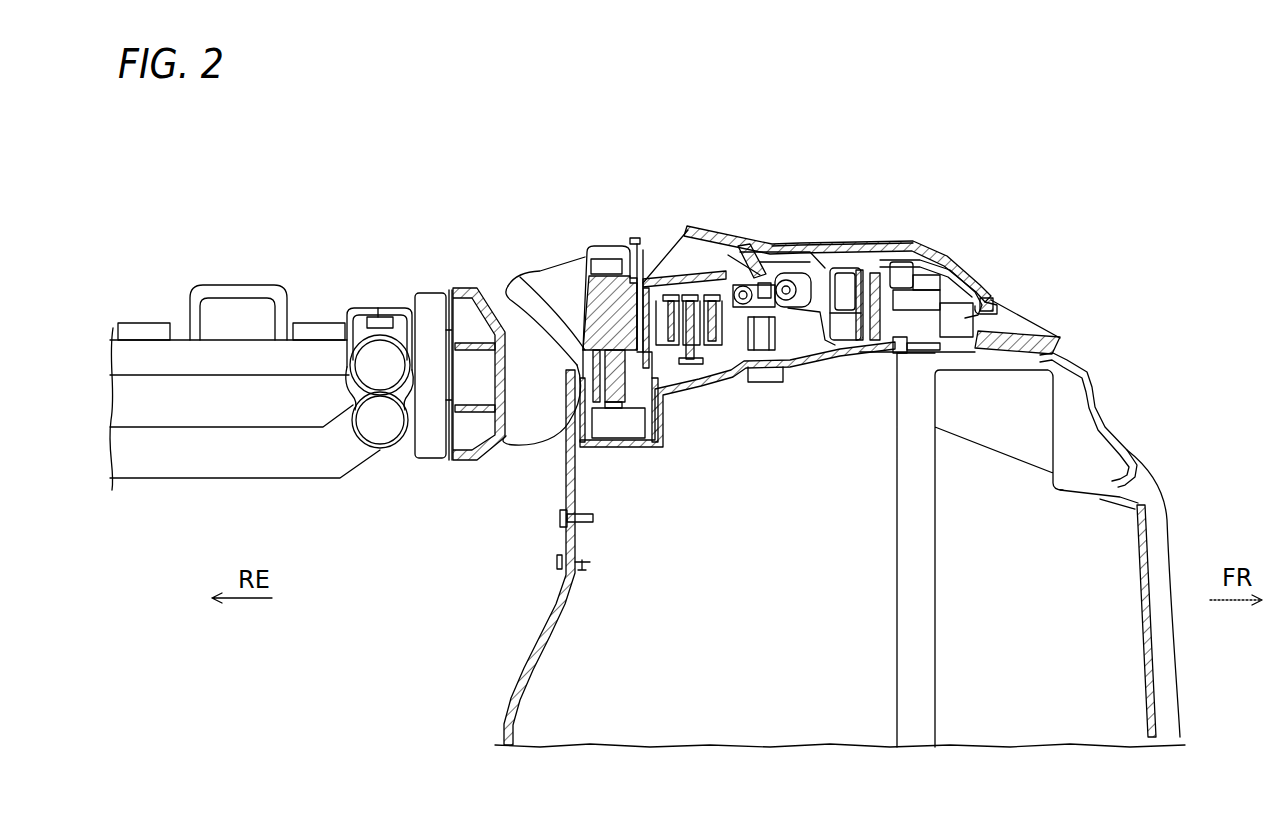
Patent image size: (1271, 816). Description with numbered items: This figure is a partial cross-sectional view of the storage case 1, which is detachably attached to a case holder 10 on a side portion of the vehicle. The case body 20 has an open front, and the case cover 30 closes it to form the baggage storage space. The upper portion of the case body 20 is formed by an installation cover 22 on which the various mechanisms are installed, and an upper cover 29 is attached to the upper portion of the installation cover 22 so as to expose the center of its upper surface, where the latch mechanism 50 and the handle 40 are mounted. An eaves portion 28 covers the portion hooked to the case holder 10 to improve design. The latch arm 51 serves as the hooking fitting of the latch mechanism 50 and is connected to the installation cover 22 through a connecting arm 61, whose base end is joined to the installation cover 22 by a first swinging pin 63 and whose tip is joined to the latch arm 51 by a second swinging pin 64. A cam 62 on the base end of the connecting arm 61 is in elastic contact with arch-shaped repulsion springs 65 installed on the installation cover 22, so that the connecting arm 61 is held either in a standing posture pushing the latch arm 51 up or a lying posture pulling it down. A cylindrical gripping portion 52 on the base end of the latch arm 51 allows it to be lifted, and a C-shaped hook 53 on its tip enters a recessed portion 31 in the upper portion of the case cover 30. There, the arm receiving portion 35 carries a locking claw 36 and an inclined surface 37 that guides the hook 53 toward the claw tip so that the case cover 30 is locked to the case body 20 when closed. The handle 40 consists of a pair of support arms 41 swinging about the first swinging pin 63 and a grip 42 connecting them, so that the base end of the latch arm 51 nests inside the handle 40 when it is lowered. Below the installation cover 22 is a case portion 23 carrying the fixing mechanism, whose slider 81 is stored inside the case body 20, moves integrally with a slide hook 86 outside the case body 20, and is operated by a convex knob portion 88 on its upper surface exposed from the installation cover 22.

The storage case 1 is at (1100, 343).
The case holder 10 is at (478, 287).
The case body 20 is at (568, 485).
The installation cover 22 is at (868, 250).
The case portion 23 is at (700, 376).
The eaves portion 28 is at (540, 270).
The upper cover 29 is at (840, 310).
The case cover 30 is at (1168, 438).
The recessed portion 31 is at (1033, 323).
The arm receiving portion 35 is at (940, 275).
The locking claw 36 is at (980, 293).
The inclined surface 37 is at (987, 283).
The handle 40 is at (637, 242).
The support arms 41 is at (658, 247).
The grip 42 is at (583, 266).
The latch mechanism 50 is at (724, 256).
The latch arm 51 is at (802, 243).
The gripping portion 52 is at (688, 230).
The hook 53 is at (997, 308).
The connecting arm 61 is at (788, 285).
The cam 62 is at (835, 300).
The first swinging pin 63 is at (812, 250).
The second swinging pin 64 is at (745, 258).
The repulsion springs 65 is at (765, 340).
The slider 81 is at (633, 427).
The slide hook 86 is at (548, 446).
The knob portion 88 is at (588, 303).